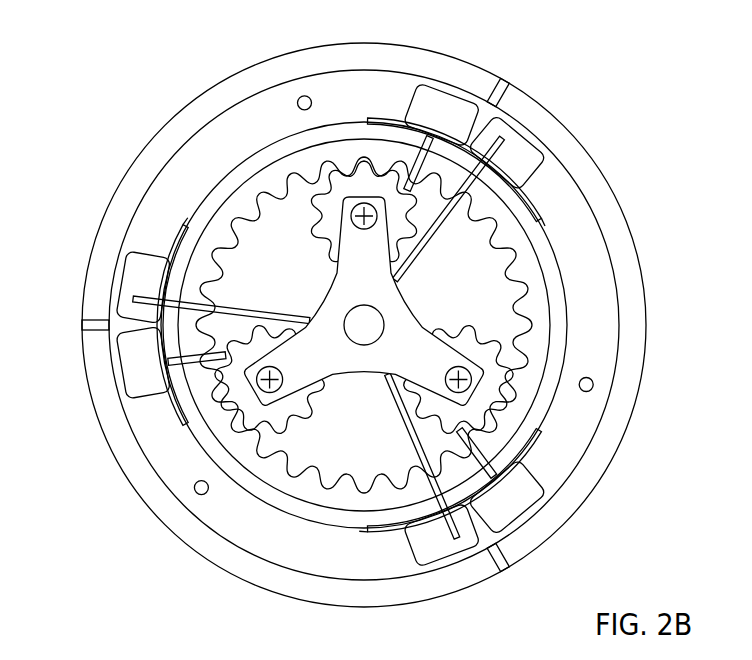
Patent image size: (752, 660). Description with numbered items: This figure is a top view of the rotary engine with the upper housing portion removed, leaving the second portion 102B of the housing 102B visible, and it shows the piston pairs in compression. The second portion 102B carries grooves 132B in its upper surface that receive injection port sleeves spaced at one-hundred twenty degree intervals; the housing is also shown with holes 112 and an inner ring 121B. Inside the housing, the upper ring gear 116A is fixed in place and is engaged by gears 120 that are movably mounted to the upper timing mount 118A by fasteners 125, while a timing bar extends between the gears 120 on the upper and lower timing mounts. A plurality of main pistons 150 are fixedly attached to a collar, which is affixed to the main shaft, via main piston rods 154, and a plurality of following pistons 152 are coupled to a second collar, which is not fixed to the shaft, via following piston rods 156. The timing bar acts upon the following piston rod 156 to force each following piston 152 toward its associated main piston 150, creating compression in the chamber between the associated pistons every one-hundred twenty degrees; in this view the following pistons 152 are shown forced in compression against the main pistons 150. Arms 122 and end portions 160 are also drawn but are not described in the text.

The second portion of the housing 102B is at (558, 117).
The mounting hole 112 is at (301, 96).
The upper ring gear 116A is at (278, 170).
The upper timing mount 118A is at (411, 299).
The gear 120 is at (318, 205).
The inner housing ring 121B is at (612, 316).
The link arm 122 is at (287, 320).
The fastener 125 is at (352, 226).
The groove 132B is at (494, 87).
The main piston 150 is at (512, 140).
The following piston 152 is at (424, 96).
The main piston rod 154 is at (485, 215).
The following piston rod 156 is at (380, 109).
The spring end 160 is at (537, 226).